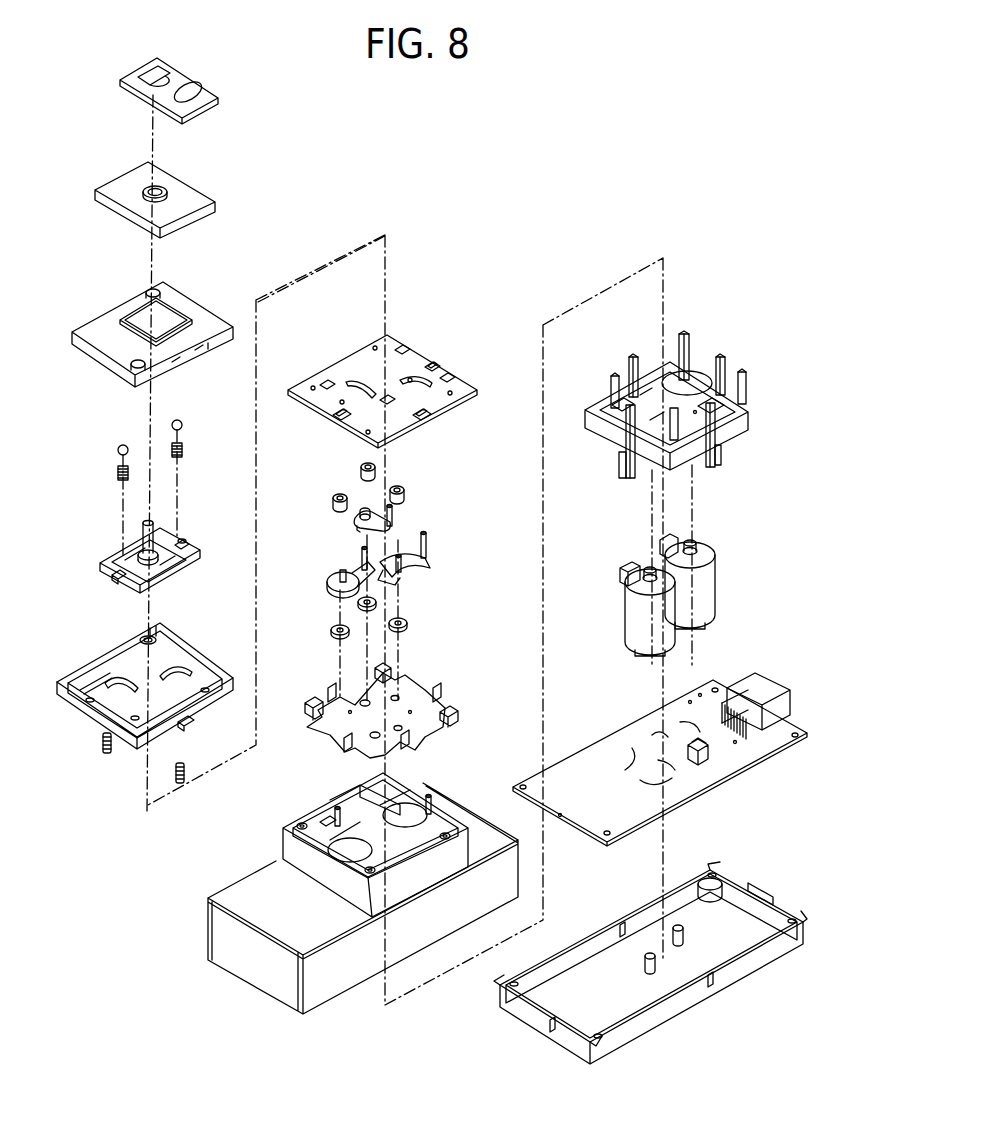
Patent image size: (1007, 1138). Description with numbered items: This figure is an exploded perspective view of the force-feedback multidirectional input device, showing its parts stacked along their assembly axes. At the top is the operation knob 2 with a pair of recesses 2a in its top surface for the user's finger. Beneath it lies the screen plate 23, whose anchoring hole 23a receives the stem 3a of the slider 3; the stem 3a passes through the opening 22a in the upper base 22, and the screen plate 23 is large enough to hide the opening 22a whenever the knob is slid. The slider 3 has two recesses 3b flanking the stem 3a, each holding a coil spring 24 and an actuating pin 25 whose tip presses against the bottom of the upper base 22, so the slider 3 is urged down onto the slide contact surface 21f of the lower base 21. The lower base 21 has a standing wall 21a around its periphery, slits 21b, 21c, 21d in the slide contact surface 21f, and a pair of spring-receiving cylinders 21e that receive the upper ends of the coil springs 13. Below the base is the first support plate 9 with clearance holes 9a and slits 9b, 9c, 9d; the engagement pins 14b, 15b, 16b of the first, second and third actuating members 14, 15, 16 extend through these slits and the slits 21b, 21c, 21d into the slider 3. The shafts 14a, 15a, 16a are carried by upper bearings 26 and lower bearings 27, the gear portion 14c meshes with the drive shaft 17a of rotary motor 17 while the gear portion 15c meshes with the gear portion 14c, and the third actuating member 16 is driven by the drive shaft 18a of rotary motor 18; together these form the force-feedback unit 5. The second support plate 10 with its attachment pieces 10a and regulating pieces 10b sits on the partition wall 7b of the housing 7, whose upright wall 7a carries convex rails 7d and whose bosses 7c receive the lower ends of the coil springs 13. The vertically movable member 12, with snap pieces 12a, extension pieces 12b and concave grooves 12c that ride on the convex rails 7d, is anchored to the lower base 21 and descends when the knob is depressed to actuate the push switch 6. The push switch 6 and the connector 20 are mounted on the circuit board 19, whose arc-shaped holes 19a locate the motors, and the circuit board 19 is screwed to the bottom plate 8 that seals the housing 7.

The operation knob 2 is at (198, 82).
The recesses 2a is at (150, 75).
The screen plate 23 is at (190, 182).
The anchoring hole 23a is at (148, 186).
The upper base 22 is at (125, 305).
The opening 22a is at (180, 320).
The actuating pin 25 is at (122, 445).
The coil spring 24 is at (118, 473).
The slider 3 is at (108, 555).
The stem 3a is at (152, 528).
The recesses 3b is at (184, 540).
The lower base 21 is at (82, 665).
The standing wall 21a is at (87, 692).
The slit 21b is at (178, 672).
The slit 21c is at (115, 688).
The slit 21d is at (133, 683).
The spring-receiving cylinders 21e is at (182, 725).
The slide contact surface 21f is at (160, 640).
The coil springs 13 is at (104, 748).
The first support plate 9 is at (325, 372).
The clearance holes 9a is at (338, 417).
The slit 9b is at (438, 365).
The slit 9c is at (360, 378).
The slit 9d is at (408, 378).
The upper bearing 26 is at (336, 492).
The third actuating member 16 is at (357, 522).
The shaft 16a is at (364, 510).
The engagement pin 16b is at (393, 510).
The second actuating member 15 is at (328, 587).
The shaft 15a is at (333, 575).
The engagement pin 15b is at (362, 552).
The gear portion 15c is at (360, 602).
The first actuating member 14 is at (430, 575).
The shaft 14a is at (400, 552).
The engagement pin 14b is at (428, 542).
The gear portion 14c is at (401, 580).
The lower bearing 27 is at (408, 624).
The second support plate 10 is at (405, 692).
The attachment pieces 10a is at (308, 705).
The regulating pieces 10b is at (440, 692).
The housing 7 is at (208, 950).
The upright wall 7a is at (285, 852).
The partition wall 7b is at (445, 822).
The bosses 7c is at (420, 852).
The convex rails 7d is at (428, 798).
The force-feedback unit 5 is at (590, 545).
The vertically movable member 12 is at (750, 420).
The snap pieces 12a is at (614, 378).
The extension pieces 12b is at (633, 357).
The concave grooves 12c is at (721, 450).
The rotary motor 17 is at (625, 630).
The drive shaft 17a is at (622, 577).
The rotary motor 18 is at (716, 582).
The drive shaft 18a is at (698, 548).
The connector 20 is at (748, 682).
The circuit board 19 is at (732, 760).
The arc-shaped holes 19a is at (657, 730).
The push switch 6 is at (698, 766).
The bottom plate 8 is at (660, 1032).